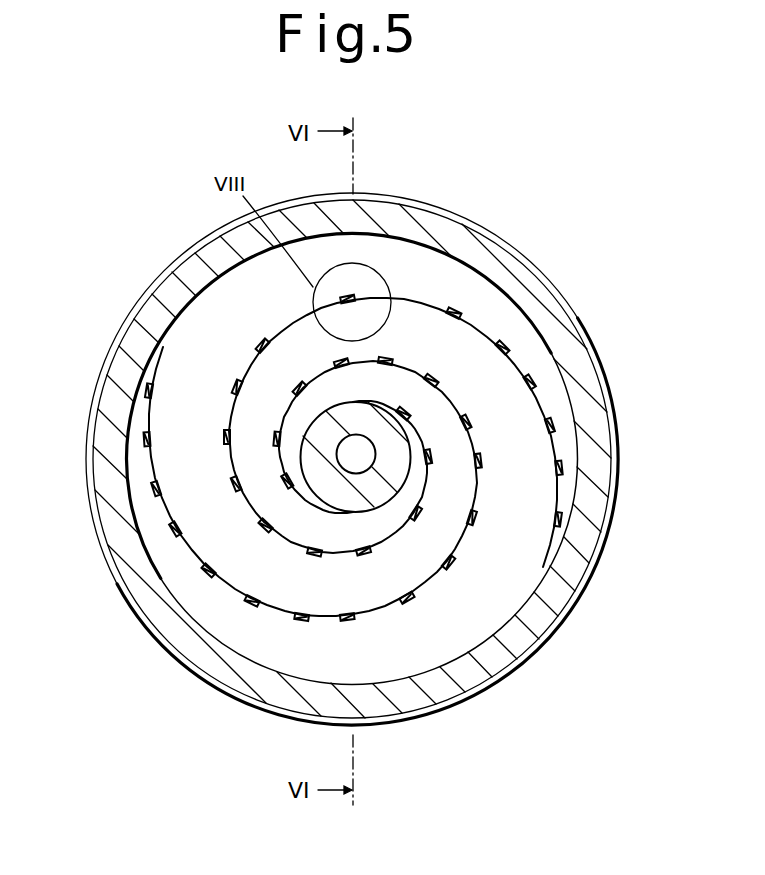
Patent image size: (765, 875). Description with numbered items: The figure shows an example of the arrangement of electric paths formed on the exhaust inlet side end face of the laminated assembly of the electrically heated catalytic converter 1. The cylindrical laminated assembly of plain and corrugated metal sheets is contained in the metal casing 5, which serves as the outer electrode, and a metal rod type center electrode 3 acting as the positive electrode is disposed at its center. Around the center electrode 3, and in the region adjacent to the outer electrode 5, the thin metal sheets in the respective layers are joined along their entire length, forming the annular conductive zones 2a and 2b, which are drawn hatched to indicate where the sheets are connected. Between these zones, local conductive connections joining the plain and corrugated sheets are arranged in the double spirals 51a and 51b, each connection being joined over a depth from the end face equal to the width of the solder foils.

The electrically heated catalytic converter 1 is at (540, 239).
The annular conductive zone 2a is at (313, 455).
The annular conductive zone 2b is at (188, 642).
The center electrode 3 is at (363, 462).
The metal casing 5 is at (513, 652).
The double spiral 51a is at (538, 402).
The double spiral 51b is at (473, 447).